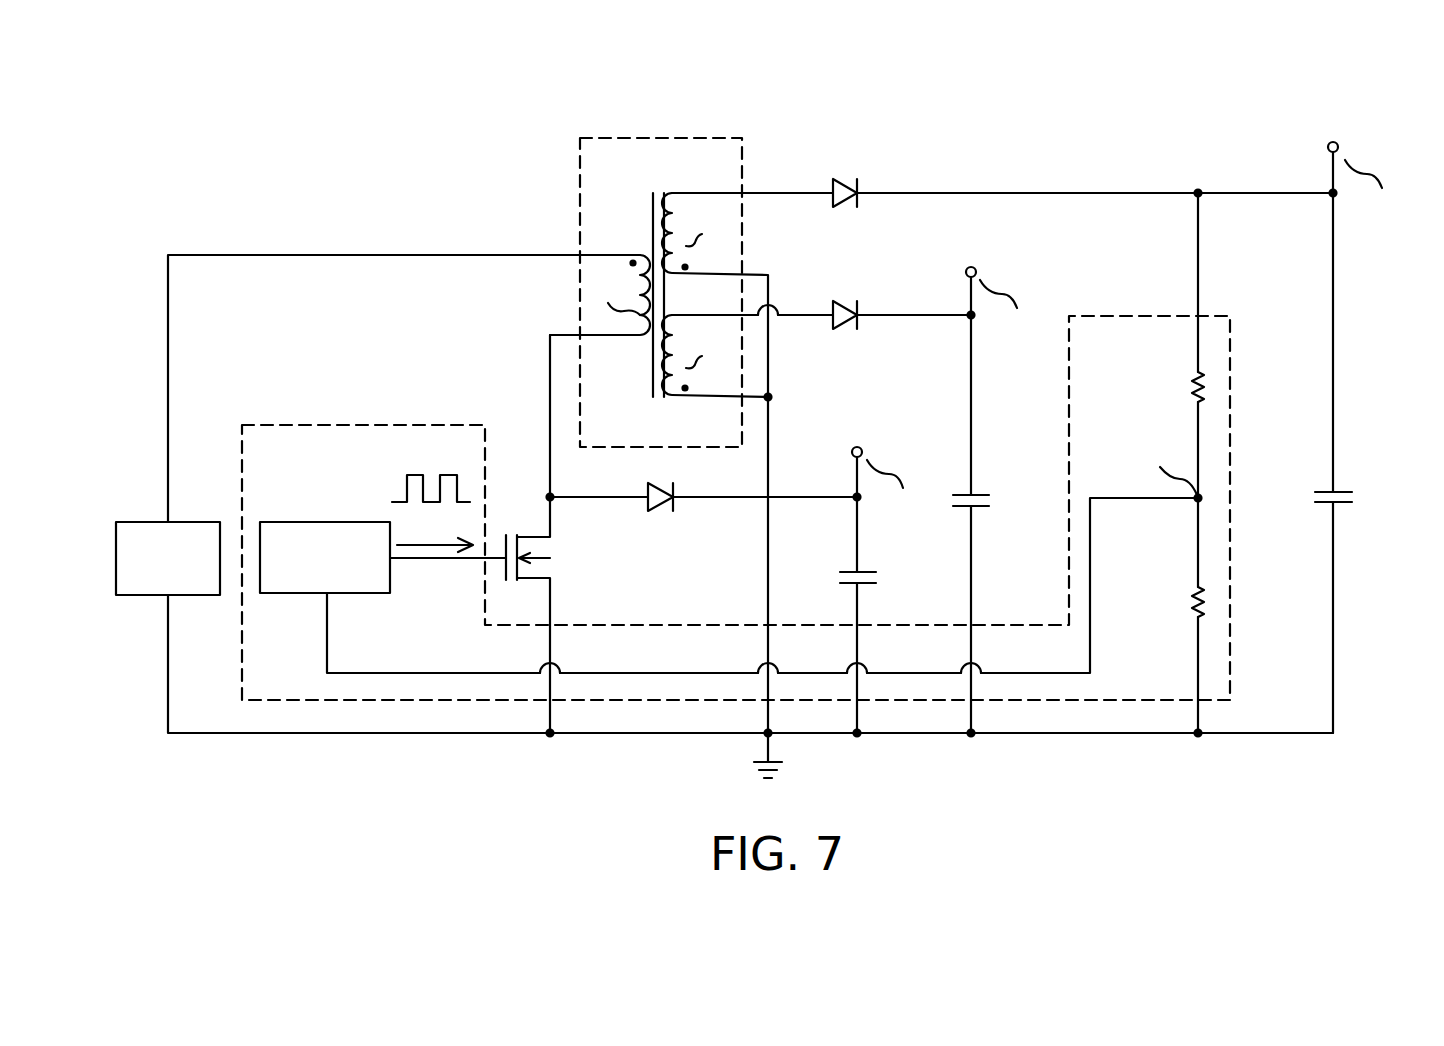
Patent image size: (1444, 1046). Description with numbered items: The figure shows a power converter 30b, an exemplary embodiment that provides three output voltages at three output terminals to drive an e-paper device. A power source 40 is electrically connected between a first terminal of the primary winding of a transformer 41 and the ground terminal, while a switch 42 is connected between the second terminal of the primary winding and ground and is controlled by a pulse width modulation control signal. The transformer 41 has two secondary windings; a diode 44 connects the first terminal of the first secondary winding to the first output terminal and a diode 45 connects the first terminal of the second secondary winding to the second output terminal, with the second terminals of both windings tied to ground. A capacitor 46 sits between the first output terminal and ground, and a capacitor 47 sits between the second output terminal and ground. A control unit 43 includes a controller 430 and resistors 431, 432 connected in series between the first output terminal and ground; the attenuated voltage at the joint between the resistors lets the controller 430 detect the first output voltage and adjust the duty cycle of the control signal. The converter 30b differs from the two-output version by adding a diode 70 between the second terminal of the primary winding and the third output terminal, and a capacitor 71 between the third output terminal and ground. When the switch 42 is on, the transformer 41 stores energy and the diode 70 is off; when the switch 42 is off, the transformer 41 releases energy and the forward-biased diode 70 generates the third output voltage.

The power converter 30b is at (196, 92).
The power source 40 is at (200, 522).
The transformer 41 is at (661, 137).
The switch 42 is at (533, 522).
The control unit 43 is at (325, 425).
The controller 430 is at (327, 522).
The resistor 431 is at (1190, 386).
The resistor 432 is at (1190, 598).
The diode 44 is at (848, 180).
The diode 45 is at (848, 301).
The capacitor 46 is at (1322, 485).
The capacitor 47 is at (985, 487).
The diode 70 is at (657, 518).
The capacitor 71 is at (846, 565).